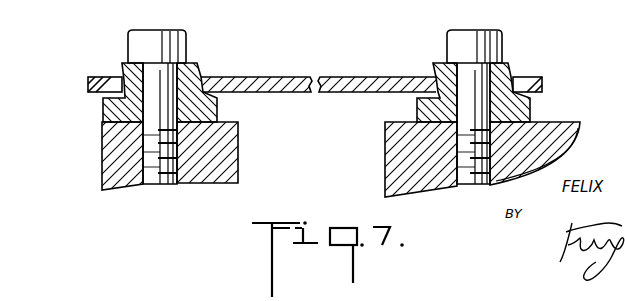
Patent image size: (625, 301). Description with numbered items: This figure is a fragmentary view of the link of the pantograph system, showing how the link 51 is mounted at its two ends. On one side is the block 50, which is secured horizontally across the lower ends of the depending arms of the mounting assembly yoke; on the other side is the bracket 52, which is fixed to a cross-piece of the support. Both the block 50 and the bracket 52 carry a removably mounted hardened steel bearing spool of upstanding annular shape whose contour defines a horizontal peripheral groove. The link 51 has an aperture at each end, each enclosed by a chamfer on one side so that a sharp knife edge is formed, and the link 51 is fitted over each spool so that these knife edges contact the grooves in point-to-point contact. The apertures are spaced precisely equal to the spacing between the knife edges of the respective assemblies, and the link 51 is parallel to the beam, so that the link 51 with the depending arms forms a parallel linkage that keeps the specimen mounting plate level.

The block 50 is at (107, 158).
The link 51 is at (293, 77).
The bracket 52 is at (398, 170).